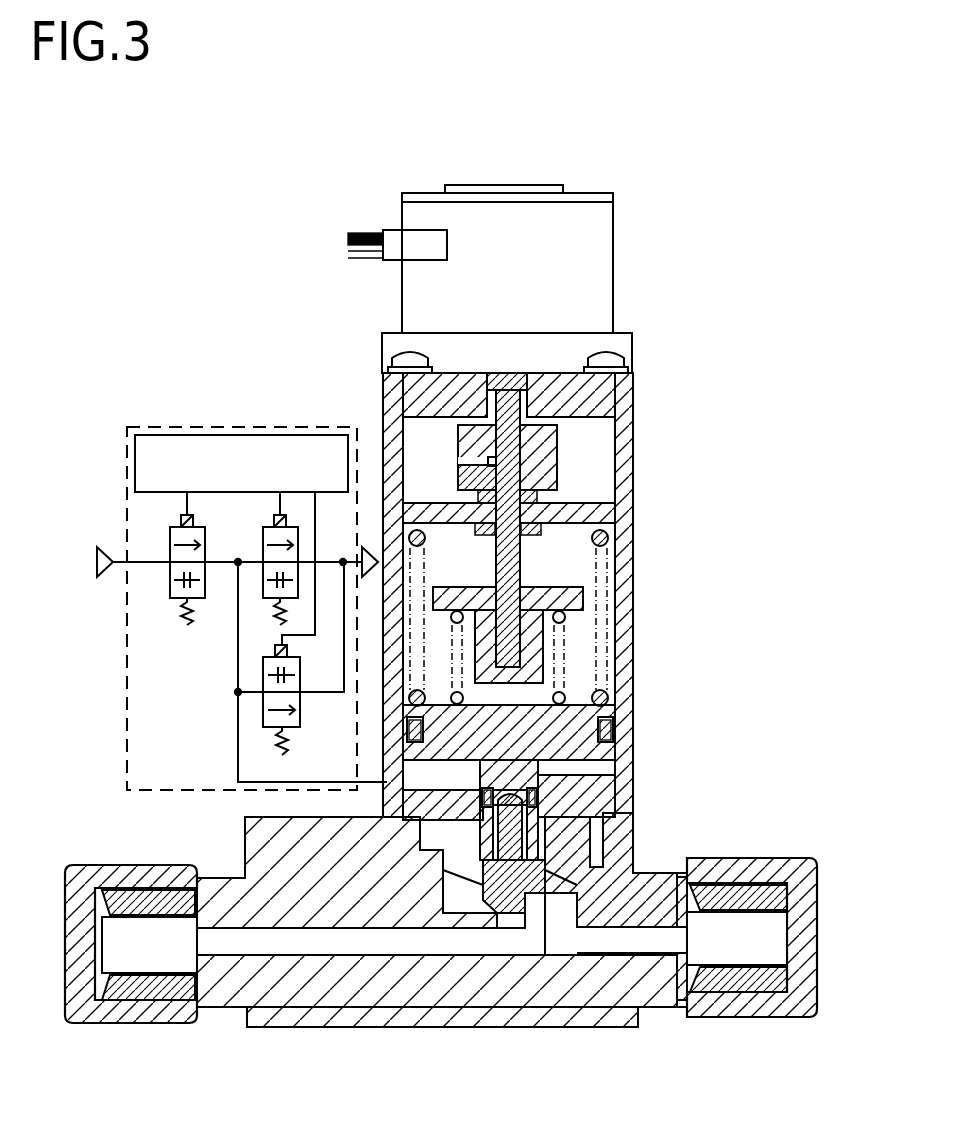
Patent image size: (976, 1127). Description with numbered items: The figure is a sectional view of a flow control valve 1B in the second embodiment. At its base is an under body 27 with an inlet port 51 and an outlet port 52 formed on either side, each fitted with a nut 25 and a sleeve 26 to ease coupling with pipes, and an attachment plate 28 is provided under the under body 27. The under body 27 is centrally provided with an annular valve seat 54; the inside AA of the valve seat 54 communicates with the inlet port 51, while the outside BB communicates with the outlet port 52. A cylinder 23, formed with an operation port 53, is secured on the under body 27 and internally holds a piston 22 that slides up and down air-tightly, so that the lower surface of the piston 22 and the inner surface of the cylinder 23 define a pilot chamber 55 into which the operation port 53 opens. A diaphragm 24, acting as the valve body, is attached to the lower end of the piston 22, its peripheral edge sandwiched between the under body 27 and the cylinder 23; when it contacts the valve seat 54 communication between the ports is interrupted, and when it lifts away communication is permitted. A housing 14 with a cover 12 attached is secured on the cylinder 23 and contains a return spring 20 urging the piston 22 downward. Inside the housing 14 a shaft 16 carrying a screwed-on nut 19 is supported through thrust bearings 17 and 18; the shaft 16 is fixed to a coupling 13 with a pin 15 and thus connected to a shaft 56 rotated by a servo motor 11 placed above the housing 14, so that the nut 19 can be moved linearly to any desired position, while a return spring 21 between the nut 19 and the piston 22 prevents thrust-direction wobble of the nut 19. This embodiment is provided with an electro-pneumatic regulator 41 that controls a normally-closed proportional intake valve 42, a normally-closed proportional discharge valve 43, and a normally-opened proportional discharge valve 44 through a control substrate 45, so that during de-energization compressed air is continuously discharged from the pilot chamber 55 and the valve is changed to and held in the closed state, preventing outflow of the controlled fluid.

The flow control valve 1B is at (620, 185).
The servo motor 11 is at (600, 245).
The cover 12 is at (620, 388).
The coupling 13 is at (560, 452).
The housing 14 is at (625, 478).
The pin 15 is at (465, 465).
The shaft 16 is at (570, 588).
The thrust bearing 17 is at (560, 500).
The thrust bearing 18 is at (540, 535).
The nut 19 is at (583, 600).
The return spring 20 is at (612, 698).
The return spring 21 is at (598, 655).
The piston 22 is at (612, 730).
The cylinder 23 is at (605, 798).
The diaphragm 24 is at (540, 828).
The nut 25 is at (82, 880).
The sleeve 26 is at (85, 965).
The under body 27 is at (648, 983).
The attachment plate 28 is at (540, 1015).
The electro-pneumatic regulator 41 is at (190, 425).
The normally-closed proportional intake valve 42 is at (172, 547).
The normally-closed proportional discharge valve 43 is at (266, 547).
The normally-opened proportional discharge valve 44 is at (300, 712).
The control substrate 45 is at (263, 435).
The inlet port 51 is at (118, 950).
The outlet port 52 is at (760, 952).
The operation port 53 is at (387, 790).
The valve seat 54 is at (465, 905).
The pilot chamber 55 is at (600, 765).
The shaft 56 is at (515, 373).
The inside of the valve seat AA is at (337, 943).
The outside of the valve seat BB is at (598, 940).